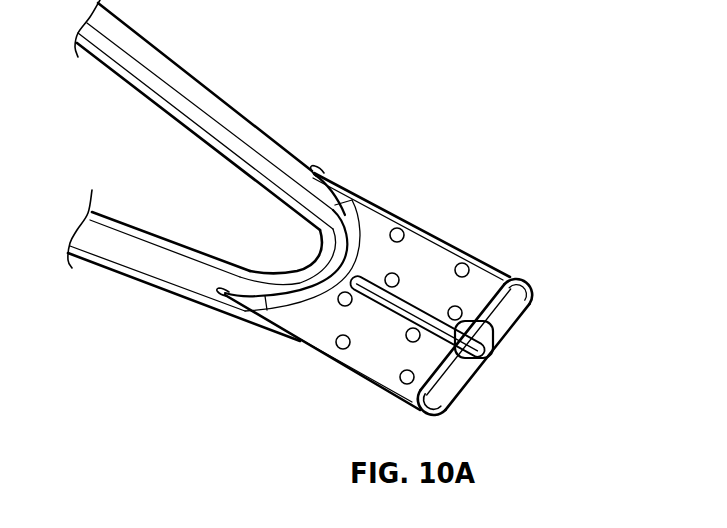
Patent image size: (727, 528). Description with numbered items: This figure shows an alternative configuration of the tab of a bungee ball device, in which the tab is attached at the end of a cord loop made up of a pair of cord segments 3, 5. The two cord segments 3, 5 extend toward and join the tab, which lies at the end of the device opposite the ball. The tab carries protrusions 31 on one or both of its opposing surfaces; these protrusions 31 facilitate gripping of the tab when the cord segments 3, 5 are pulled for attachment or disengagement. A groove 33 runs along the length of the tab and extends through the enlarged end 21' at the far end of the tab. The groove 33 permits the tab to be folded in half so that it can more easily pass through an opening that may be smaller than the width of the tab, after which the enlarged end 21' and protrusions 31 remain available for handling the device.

The cord segment 5 is at (232, 106).
The cord segment 3 is at (150, 233).
The protrusions 31 is at (463, 262).
The enlarged end 21' is at (501, 333).
The groove 33 is at (487, 340).